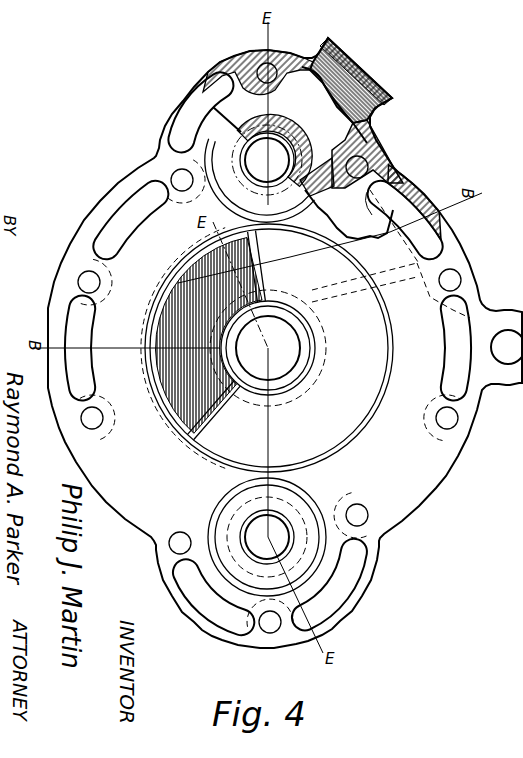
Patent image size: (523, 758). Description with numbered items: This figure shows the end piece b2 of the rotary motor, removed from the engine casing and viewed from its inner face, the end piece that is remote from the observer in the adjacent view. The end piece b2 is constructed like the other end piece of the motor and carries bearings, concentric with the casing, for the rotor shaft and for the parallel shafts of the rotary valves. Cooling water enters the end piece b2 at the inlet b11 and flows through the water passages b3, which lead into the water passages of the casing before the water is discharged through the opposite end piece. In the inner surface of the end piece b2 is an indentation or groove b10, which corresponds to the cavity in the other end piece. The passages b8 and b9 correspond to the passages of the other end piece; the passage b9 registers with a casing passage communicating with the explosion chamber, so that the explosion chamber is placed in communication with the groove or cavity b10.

The end piece b2 is at (373, 154).
The water passages b3 is at (453, 370).
The passage b8 is at (349, 213).
The passage b9 is at (397, 205).
The indentation or groove b10 is at (198, 296).
The water inlet b11 is at (372, 86).